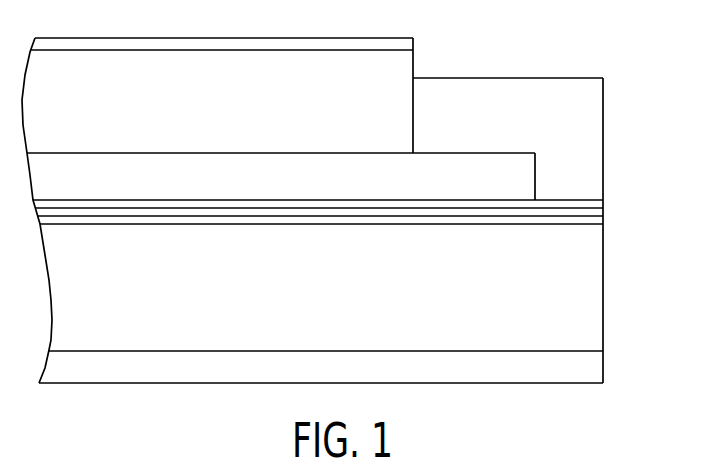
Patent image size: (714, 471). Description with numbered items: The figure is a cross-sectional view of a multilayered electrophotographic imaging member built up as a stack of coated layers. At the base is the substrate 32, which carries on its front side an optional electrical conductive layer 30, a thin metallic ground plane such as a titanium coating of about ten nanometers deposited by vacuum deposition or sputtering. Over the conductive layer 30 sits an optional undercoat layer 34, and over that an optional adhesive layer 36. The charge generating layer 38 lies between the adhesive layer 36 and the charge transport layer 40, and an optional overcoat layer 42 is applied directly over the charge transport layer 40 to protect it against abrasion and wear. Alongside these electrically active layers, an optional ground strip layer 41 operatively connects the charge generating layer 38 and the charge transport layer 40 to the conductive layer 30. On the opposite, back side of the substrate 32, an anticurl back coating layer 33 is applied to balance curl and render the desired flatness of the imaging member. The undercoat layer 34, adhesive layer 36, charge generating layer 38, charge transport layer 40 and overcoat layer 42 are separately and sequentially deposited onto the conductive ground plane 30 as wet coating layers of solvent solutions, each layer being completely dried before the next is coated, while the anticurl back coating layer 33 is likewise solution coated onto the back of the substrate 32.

The electrical conductive layer 30 is at (603, 222).
The substrate 32 is at (597, 288).
The anticurl back coating layer 33 is at (597, 368).
The undercoat layer 34 is at (603, 212).
The adhesive layer 36 is at (603, 205).
The charge generating layer 38 is at (529, 179).
The charge transport layer 40 is at (407, 70).
The ground strip layer 41 is at (597, 127).
The overcoat layer 42 is at (407, 45).